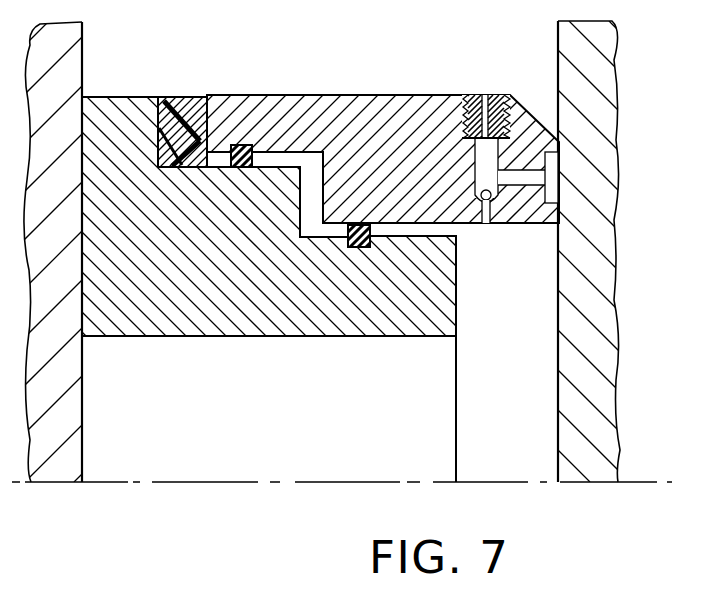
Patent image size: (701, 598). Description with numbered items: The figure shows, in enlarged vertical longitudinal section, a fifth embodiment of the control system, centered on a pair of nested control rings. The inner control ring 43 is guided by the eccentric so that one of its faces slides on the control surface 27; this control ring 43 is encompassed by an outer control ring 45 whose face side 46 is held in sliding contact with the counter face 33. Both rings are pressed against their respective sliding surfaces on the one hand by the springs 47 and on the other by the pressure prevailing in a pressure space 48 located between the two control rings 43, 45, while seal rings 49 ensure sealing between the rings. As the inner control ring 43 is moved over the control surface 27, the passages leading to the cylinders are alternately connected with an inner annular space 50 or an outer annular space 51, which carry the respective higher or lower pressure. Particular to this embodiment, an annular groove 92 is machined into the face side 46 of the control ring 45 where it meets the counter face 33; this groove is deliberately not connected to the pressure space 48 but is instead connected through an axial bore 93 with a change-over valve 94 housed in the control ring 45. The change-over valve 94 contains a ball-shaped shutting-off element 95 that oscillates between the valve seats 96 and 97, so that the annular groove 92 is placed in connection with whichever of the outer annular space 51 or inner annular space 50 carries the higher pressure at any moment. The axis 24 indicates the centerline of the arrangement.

The axis of rotation 24 is at (200, 485).
The control surface 27 is at (83, 462).
The counter face 33 is at (558, 53).
The control ring 43 is at (121, 118).
The control ring 45 is at (359, 130).
The face side 46 is at (522, 359).
The springs 47 is at (188, 97).
The pressure space 48 is at (318, 215).
The seal rings 49 is at (243, 147).
The inner annular space 50 is at (222, 443).
The outer annular space 51 is at (340, 57).
The annular groove 92 is at (586, 165).
The axial bore 93 is at (577, 185).
The change-over valve 94 is at (609, 141).
The ball-shaped shutting-off element 95 is at (659, 287).
The valve seat 96 is at (470, 92).
The valve seat 97 is at (661, 422).